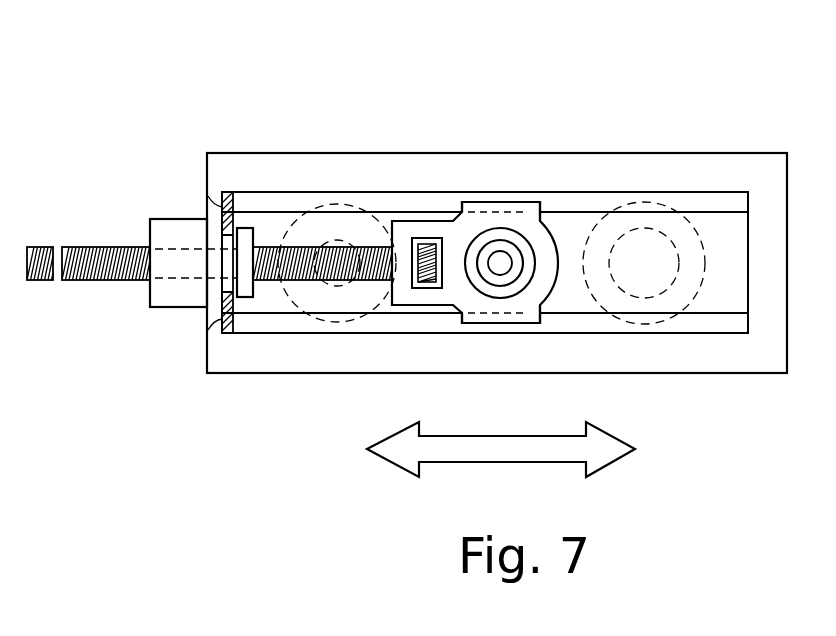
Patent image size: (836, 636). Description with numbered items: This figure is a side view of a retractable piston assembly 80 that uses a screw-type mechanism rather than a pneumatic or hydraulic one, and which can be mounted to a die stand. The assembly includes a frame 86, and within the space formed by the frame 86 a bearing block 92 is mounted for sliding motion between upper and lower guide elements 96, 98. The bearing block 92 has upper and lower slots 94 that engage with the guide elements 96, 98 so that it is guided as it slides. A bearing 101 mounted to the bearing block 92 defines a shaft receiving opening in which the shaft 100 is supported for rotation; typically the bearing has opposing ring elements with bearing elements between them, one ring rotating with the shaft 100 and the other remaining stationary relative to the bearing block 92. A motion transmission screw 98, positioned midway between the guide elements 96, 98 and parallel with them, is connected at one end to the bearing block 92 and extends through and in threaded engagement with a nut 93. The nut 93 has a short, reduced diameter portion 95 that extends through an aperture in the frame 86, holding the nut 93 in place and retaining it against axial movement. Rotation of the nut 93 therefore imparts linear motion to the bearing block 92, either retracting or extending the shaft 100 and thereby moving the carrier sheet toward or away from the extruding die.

The retractable piston assembly 80 is at (441, 100).
The frame 86 is at (710, 168).
The bearing block 92 is at (540, 275).
The nut 93 is at (188, 297).
The upper and lower slots 94 is at (499, 205).
The reduced diameter portion 95 is at (233, 265).
The upper guide element 96 is at (596, 206).
The motion transmission screw 98 is at (103, 280).
The shaft 100 is at (503, 262).
The bearing 101 is at (466, 262).